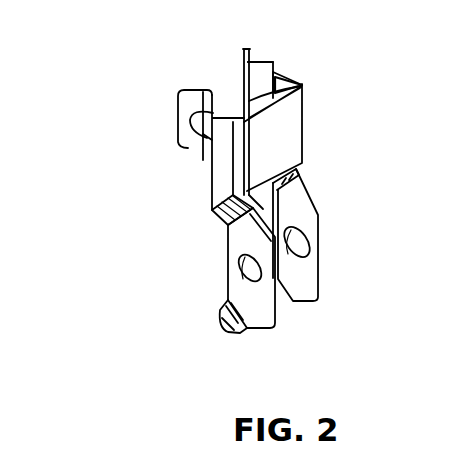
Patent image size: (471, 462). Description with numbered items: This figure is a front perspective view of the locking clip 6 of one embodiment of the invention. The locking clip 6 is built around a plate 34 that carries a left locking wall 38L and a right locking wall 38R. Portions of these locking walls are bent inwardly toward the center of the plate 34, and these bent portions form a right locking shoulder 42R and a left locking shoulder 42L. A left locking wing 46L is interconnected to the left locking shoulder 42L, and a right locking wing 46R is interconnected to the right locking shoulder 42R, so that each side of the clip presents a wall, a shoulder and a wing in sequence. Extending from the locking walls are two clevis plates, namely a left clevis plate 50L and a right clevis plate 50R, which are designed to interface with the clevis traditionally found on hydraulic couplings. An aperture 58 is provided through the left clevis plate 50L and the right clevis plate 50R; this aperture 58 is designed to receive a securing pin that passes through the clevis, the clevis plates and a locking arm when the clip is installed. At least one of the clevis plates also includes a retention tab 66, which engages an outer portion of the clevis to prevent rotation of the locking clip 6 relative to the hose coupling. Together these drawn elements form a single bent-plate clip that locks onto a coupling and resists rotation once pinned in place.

The locking clip 6 is at (86, 88).
The plate 34 is at (283, 143).
The right locking wing 46R is at (209, 93).
The right locking shoulder 42R is at (216, 114).
The right locking wall 38R is at (216, 116).
The left locking wing 46L is at (249, 61).
The left locking shoulder 42L is at (273, 63).
The left locking wall 38L is at (274, 77).
The left clevis plate 50L is at (310, 289).
The aperture 58 is at (303, 244).
The right clevis plate 50R is at (240, 288).
The retention tab 66 is at (240, 333).